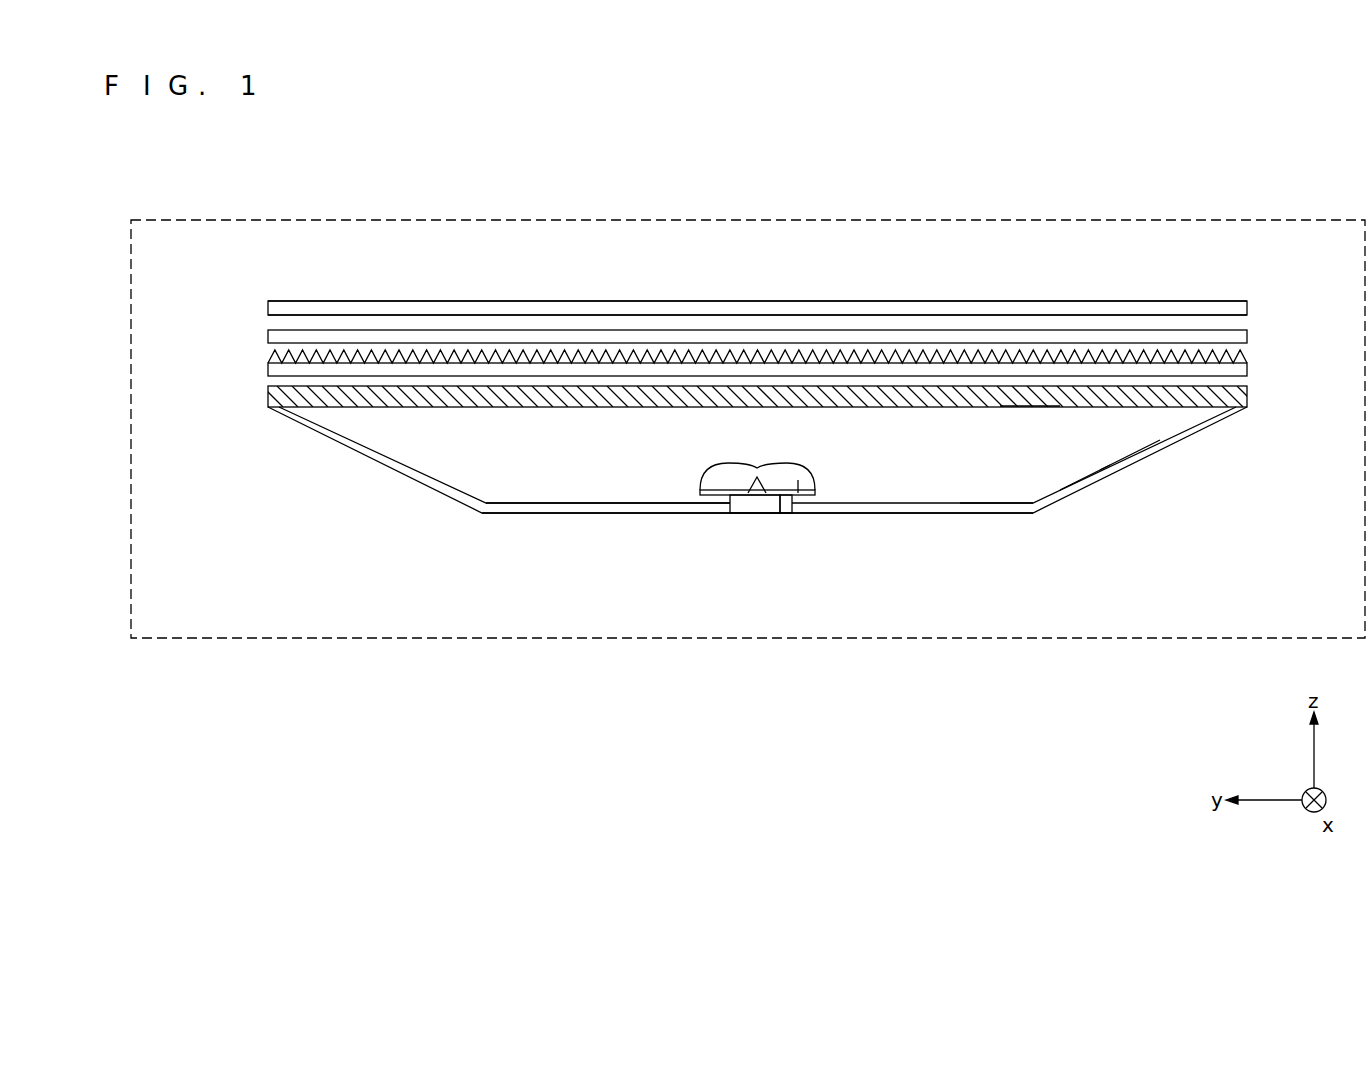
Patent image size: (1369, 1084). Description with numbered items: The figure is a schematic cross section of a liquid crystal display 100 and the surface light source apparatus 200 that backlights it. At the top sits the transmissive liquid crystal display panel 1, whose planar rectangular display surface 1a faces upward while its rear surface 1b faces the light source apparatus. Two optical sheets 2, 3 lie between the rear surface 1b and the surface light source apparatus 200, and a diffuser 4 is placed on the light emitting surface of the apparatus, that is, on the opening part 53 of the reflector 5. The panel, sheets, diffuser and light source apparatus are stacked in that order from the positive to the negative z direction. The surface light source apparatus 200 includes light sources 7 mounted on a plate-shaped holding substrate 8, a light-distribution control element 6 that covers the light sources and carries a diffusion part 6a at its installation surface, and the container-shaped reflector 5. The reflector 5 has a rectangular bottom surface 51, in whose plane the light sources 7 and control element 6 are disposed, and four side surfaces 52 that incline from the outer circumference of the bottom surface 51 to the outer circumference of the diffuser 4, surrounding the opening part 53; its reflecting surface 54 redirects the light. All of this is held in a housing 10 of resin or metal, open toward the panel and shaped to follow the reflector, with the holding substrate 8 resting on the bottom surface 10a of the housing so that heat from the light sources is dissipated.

The liquid crystal display 100 is at (1200, 220).
The liquid crystal display panel 1 is at (1247, 307).
The display surface 1a is at (280, 302).
The rear surface 1b is at (282, 314).
The optical sheet 2 is at (1247, 337).
The optical sheet 3 is at (1247, 369).
The diffuser 4 is at (1247, 397).
The surface light source apparatus 200 is at (260, 383).
The housing 10 is at (437, 491).
The bottom surface 10a is at (540, 517).
The reflector 5 is at (1215, 483).
The bottom surface 51 is at (997, 506).
The side surfaces 52 is at (1130, 452).
The opening part 53 is at (1023, 407).
The reflecting surface 54 is at (1082, 478).
The light-distribution control element 6 is at (807, 507).
The diffusion part 6a is at (790, 495).
The light sources 7 is at (752, 496).
The holding substrate 8 is at (767, 507).